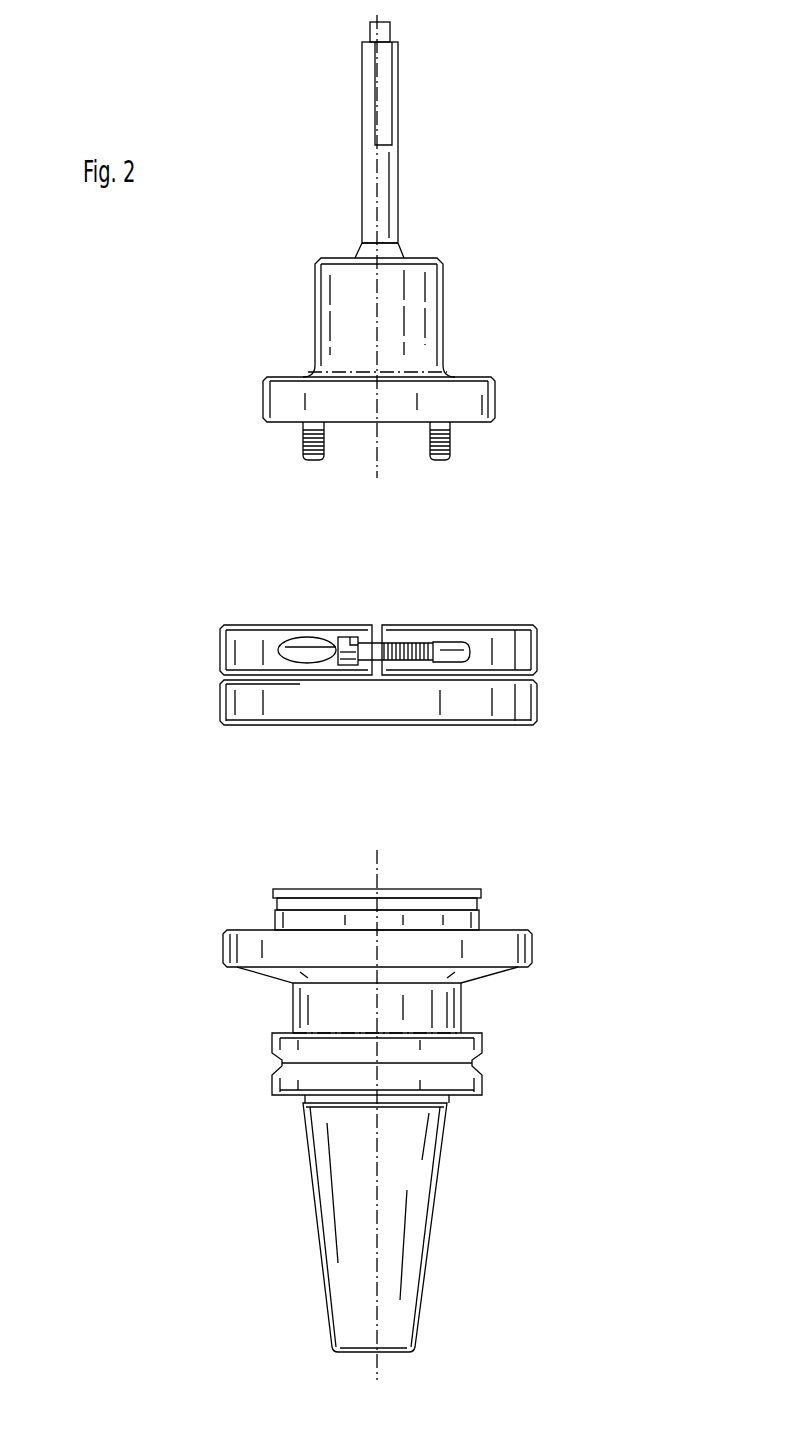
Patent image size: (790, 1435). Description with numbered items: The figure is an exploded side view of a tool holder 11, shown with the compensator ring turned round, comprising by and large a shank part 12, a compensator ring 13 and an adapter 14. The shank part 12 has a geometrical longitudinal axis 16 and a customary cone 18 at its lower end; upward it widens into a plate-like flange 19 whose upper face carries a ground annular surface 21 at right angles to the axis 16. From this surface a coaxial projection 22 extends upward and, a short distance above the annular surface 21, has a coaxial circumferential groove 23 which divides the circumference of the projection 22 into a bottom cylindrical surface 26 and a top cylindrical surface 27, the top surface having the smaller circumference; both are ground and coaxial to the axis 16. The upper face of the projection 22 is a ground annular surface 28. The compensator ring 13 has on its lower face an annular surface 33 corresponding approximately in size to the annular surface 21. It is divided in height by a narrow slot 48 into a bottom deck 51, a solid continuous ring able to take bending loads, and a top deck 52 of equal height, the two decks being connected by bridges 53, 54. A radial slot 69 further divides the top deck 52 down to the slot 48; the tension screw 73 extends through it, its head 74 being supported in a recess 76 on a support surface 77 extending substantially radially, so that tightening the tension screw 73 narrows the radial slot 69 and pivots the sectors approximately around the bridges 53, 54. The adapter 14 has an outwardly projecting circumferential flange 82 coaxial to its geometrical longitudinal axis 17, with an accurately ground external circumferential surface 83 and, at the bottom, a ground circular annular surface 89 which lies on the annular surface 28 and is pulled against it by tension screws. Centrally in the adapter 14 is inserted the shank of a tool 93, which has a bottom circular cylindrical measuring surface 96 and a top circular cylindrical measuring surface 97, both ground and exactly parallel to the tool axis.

The tool holder 11 is at (144, 522).
The shank part 12 is at (425, 1094).
The compensator ring 13 is at (413, 665).
The adapter 14 is at (405, 246).
The geometrical longitudinal axis 16 is at (377, 1308).
The geometrical longitudinal axis 17 is at (380, 212).
The cone 18 is at (315, 1218).
The plate-like flange 19 is at (532, 952).
The annular surface 21 is at (508, 930).
The coaxial projection 22 is at (272, 888).
The circumferential groove 23 is at (272, 903).
The bottom cylindrical surface 26 is at (480, 918).
The top cylindrical surface 27 is at (490, 889).
The annular surface 28 is at (330, 889).
The annular surface 33 is at (232, 727).
The slot 48 is at (307, 680).
The bottom deck 51 is at (540, 713).
The top deck 52 is at (540, 640).
The bridge 53 is at (540, 678).
The bridge 54 is at (220, 676).
The radial slot 69 is at (377, 625).
The tension screw 73 is at (347, 640).
The head 74 is at (347, 667).
The recess 76 is at (298, 650).
The support surface 77 is at (352, 640).
The circumferential flange 82 is at (495, 402).
The external circumferential surface 83 is at (467, 390).
The circular annular surface 89 is at (275, 422).
The tool 93 is at (398, 118).
The bottom circular cylindrical measuring surface 96 is at (362, 195).
The top circular cylindrical measuring surface 97 is at (370, 30).